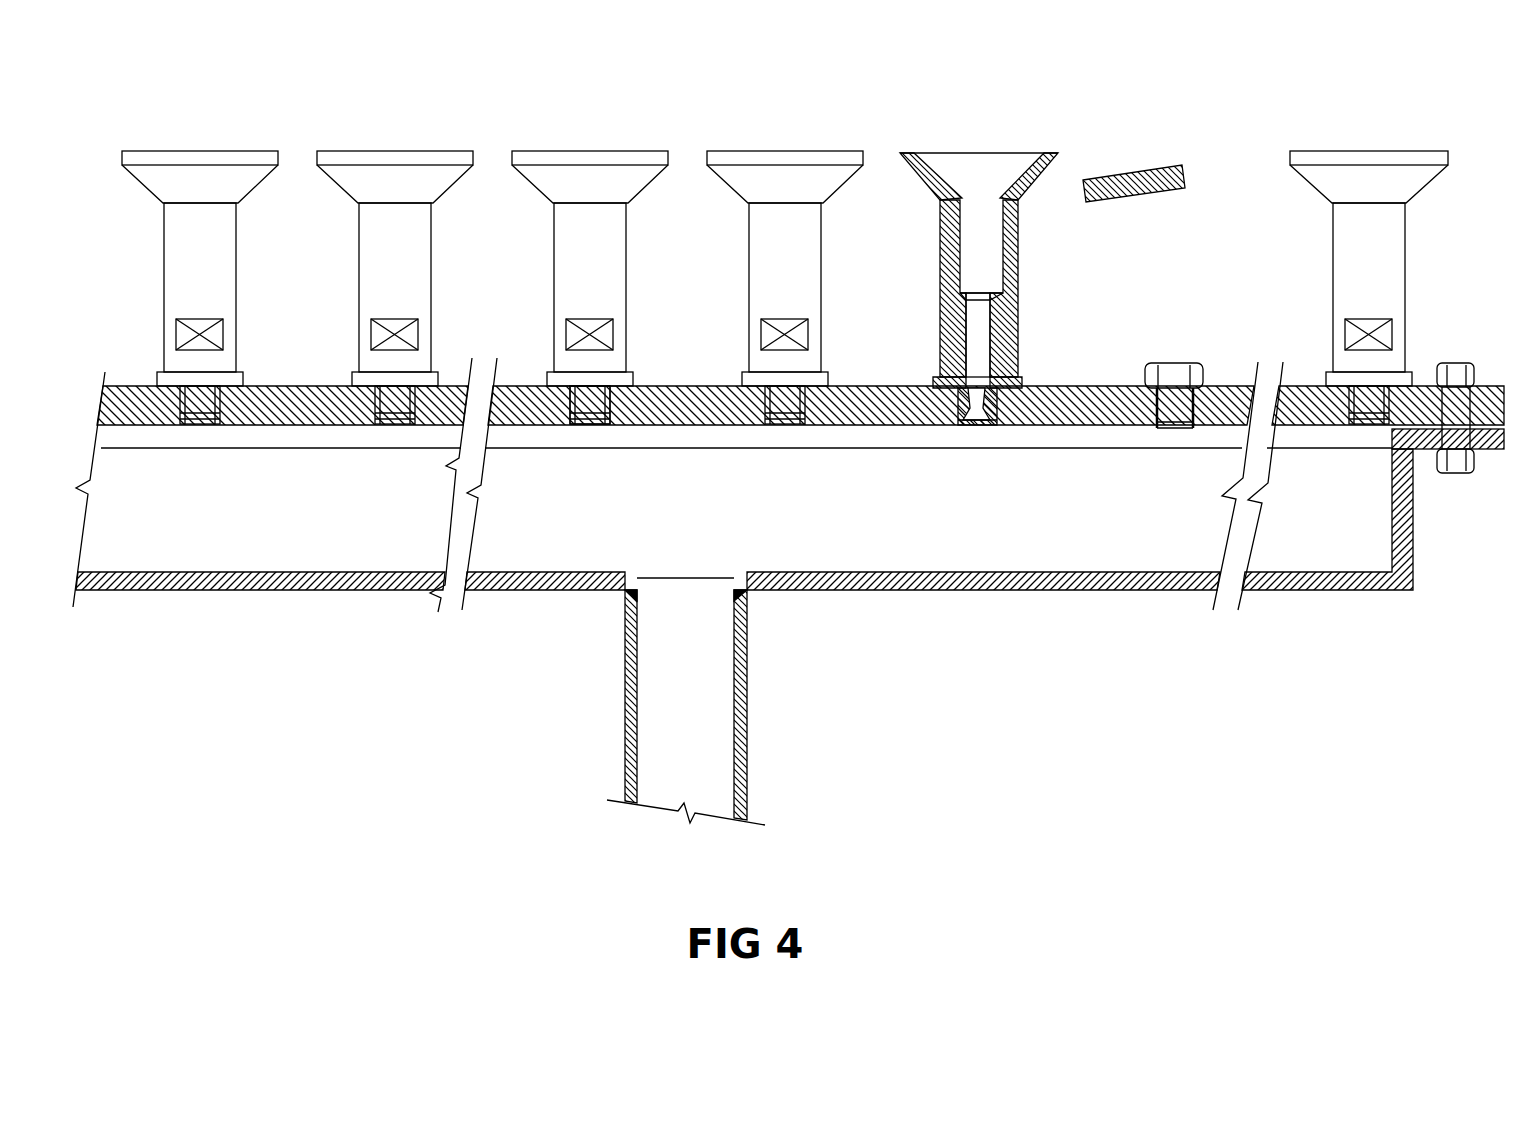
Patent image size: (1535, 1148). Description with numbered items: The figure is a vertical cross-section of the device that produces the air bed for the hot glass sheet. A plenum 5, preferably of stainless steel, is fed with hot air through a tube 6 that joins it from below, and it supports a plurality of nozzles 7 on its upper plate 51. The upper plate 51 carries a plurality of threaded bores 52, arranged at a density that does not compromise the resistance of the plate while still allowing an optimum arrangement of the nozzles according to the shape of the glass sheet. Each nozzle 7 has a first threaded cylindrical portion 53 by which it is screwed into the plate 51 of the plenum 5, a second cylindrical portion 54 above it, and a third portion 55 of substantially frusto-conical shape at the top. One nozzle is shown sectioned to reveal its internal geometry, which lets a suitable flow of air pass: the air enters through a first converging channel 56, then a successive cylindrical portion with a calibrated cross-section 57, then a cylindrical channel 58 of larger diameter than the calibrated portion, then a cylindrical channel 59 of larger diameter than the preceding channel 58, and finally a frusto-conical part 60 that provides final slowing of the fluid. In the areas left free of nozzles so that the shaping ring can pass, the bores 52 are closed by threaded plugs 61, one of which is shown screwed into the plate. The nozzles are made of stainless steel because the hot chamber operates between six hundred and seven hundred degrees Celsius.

The plenum 5 is at (1040, 592).
The tube 6 is at (749, 722).
The nozzles 7 is at (578, 158).
The upper plate 51 is at (285, 400).
The threaded bores 52 is at (1162, 432).
The first threaded cylindrical portion 53 is at (595, 425).
The second cylindrical portion 54 is at (1333, 283).
The third portion 55 is at (1335, 185).
The first converging channel 56 is at (978, 430).
The cylindrical portion with a calibrated cross-section 57 is at (1017, 368).
The cylindrical channel 58 is at (942, 333).
The cylindrical channel 59 is at (942, 262).
The final frusto-conical part 60 is at (1020, 182).
The threaded plugs 61 is at (1176, 372).